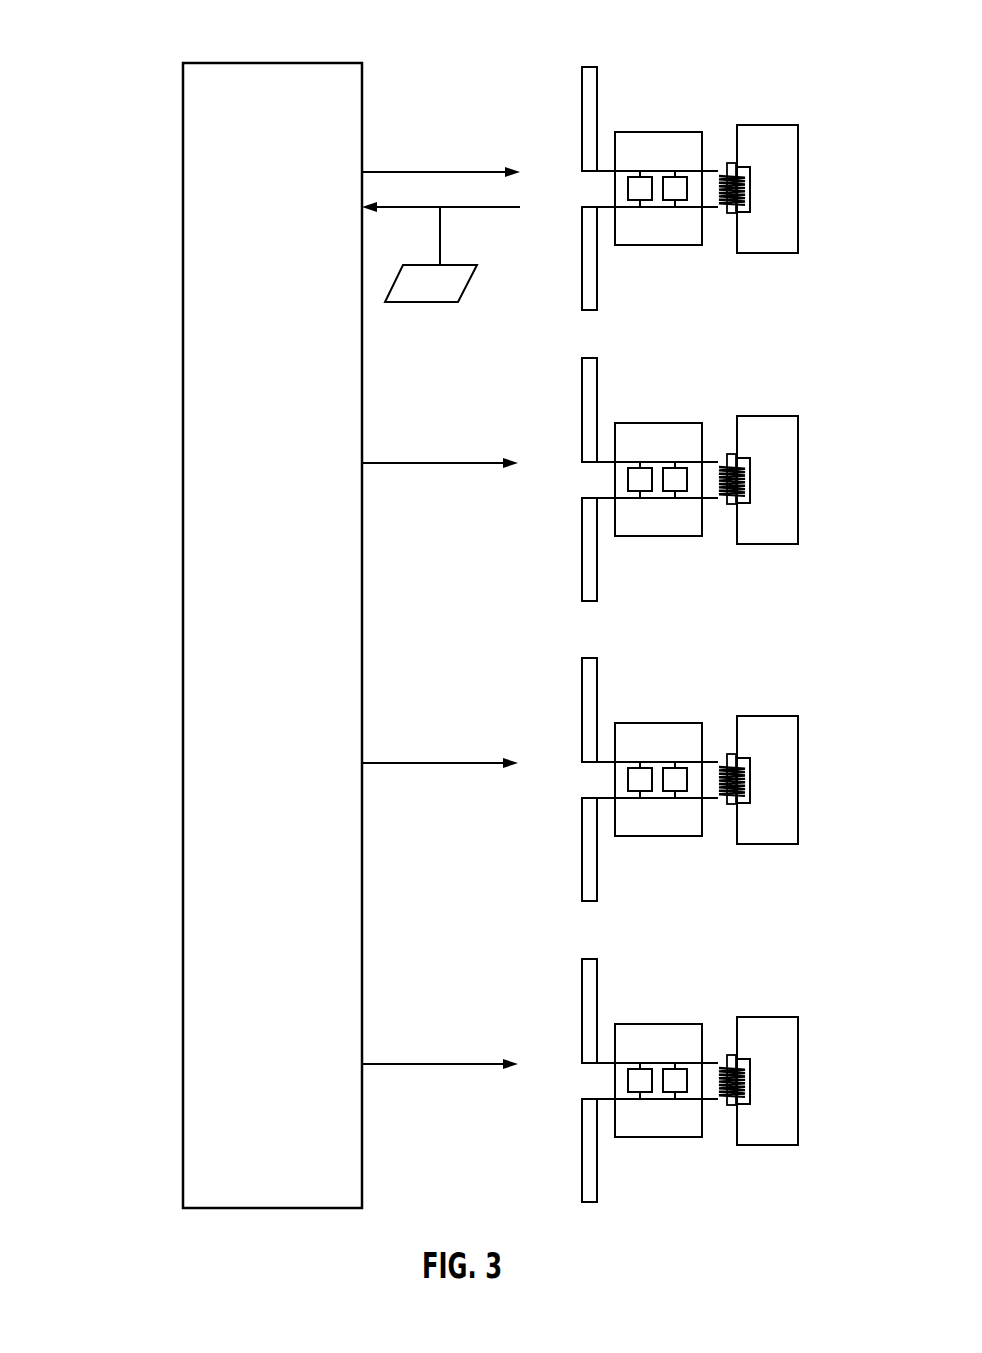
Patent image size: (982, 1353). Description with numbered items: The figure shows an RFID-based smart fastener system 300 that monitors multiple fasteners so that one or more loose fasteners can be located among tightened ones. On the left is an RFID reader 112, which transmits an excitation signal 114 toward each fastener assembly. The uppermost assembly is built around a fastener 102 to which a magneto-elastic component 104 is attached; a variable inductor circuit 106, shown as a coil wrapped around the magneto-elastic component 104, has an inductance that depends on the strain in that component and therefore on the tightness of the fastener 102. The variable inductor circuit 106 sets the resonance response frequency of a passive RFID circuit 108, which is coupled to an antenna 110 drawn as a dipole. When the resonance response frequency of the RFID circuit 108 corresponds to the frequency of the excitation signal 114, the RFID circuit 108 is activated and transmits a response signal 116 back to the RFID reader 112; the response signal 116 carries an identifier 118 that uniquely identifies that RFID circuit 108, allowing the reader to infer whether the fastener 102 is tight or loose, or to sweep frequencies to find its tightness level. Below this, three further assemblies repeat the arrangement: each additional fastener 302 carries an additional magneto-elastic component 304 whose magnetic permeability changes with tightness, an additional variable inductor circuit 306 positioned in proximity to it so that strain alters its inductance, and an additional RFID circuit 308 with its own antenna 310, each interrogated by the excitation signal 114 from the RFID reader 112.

The RFID-based smart fastener system 300 is at (143, 37).
The RFID reader 112 is at (183, 203).
The excitation signal 114 is at (420, 172).
The response signal 116 is at (488, 208).
The identifier 118 is at (407, 303).
The antenna 110 is at (582, 122).
The RFID circuit 108 is at (660, 132).
The variable inductor circuit 106 is at (731, 214).
The magneto-elastic component 104 is at (730, 163).
The fastener 102 is at (770, 125).
The antenna 310 is at (547, 780).
The additional RFID circuit 308 is at (657, 749).
The additional variable inductor circuit 306 is at (716, 823).
The additional magneto-elastic component 304 is at (714, 743).
The additional fastener 302 is at (769, 751).